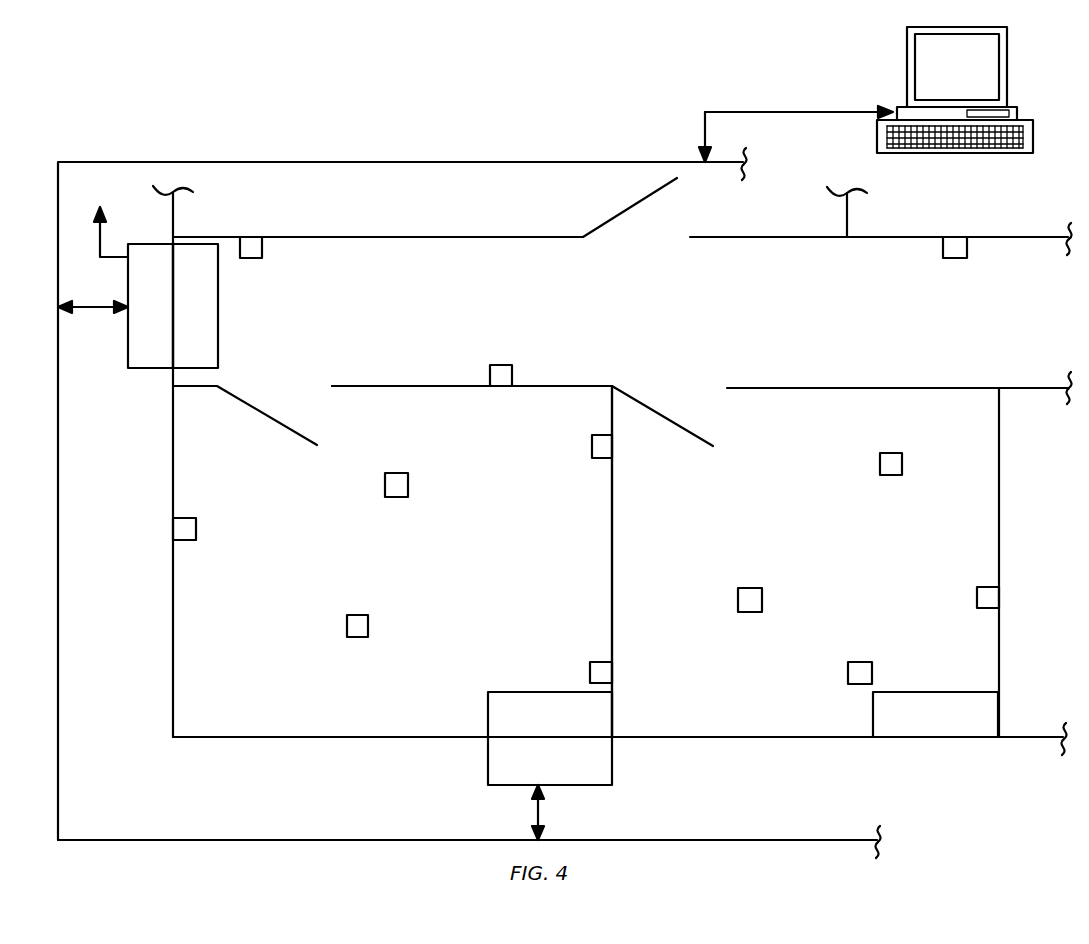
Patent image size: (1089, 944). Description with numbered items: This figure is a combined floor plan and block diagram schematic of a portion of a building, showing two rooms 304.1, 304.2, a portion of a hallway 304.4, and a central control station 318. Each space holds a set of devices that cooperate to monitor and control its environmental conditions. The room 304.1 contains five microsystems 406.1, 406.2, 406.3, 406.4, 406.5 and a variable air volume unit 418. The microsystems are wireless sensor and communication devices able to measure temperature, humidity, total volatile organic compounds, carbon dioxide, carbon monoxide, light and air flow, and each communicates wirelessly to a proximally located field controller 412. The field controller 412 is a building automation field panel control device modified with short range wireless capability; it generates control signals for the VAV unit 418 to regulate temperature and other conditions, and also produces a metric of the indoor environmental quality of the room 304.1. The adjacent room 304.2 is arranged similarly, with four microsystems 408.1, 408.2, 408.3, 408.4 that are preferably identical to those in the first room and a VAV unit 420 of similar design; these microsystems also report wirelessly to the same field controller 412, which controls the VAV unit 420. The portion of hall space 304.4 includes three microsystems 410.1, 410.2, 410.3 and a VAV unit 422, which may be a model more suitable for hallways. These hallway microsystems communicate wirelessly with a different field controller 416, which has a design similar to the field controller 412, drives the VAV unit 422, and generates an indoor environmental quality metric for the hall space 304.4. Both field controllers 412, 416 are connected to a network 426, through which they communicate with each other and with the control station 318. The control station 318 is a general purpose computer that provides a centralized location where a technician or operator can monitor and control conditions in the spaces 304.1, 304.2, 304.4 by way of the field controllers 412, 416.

The central control station 318 is at (895, 108).
The field controller 416 is at (150, 306).
The VAV unit 422 is at (195, 306).
The microsystem 410.1 is at (943, 258).
The microsystem 410.2 is at (512, 366).
The microsystem 410.3 is at (262, 258).
The room 304.1 is at (472, 561).
The room 304.2 is at (874, 450).
The hallway 304.4 is at (881, 257).
The microsystem 406.1 is at (592, 456).
The microsystem 406.2 is at (408, 476).
The microsystem 406.3 is at (368, 618).
The microsystem 406.4 is at (612, 663).
The microsystem 406.5 is at (173, 520).
The microsystem 408.1 is at (762, 590).
The microsystem 408.2 is at (902, 455).
The microsystem 408.3 is at (999, 588).
The microsystem 408.4 is at (872, 664).
The VAV unit 418 is at (550, 714).
The field controller 412 is at (550, 761).
The VAV unit 420 is at (935, 714).
The network 426 is at (718, 840).